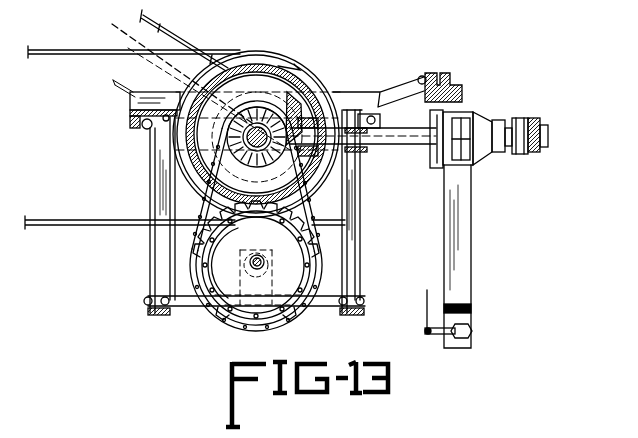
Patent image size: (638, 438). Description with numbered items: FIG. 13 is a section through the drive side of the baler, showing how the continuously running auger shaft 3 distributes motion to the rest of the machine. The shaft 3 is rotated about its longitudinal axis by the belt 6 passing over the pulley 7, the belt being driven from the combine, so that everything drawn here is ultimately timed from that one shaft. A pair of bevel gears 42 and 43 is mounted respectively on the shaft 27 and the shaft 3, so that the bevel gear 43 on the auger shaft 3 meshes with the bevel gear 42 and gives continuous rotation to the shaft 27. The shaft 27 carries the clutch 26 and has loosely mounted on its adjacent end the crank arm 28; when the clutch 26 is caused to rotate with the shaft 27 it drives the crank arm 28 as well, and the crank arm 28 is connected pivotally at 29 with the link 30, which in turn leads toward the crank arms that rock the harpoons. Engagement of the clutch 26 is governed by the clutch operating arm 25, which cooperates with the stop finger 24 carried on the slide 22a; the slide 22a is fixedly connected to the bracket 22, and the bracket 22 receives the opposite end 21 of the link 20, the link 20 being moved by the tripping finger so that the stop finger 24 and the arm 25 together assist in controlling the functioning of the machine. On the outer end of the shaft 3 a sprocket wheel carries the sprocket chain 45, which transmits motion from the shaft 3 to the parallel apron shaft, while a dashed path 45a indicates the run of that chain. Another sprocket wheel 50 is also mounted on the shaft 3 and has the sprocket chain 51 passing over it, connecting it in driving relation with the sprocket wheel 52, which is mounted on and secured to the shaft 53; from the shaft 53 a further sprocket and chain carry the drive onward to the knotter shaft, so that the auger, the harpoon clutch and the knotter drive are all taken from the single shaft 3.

The shaft 3 is at (205, 108).
The belt 6 is at (55, 56).
The pulley 7 is at (322, 92).
The link 20 is at (420, 298).
The opposite end of link 21 is at (472, 331).
The bracket 22 is at (463, 258).
The slide 22a is at (440, 73).
The stop finger 24 is at (436, 168).
The clutch operating arm 25 is at (460, 122).
The clutch 26 is at (492, 152).
The shaft 27 is at (397, 150).
The crank arm 28 is at (520, 118).
The pivot 29 is at (541, 129).
The link 30 is at (542, 150).
The bevel gear 42 is at (293, 100).
The bevel gear 43 is at (251, 108).
The sprocket chain 45 is at (183, 40).
The rod extension 45a is at (180, 79).
The sprocket wheel 50 is at (232, 170).
The sprocket chain 51 is at (308, 220).
The sprocket wheel 52 is at (222, 303).
The shaft 53 is at (288, 258).